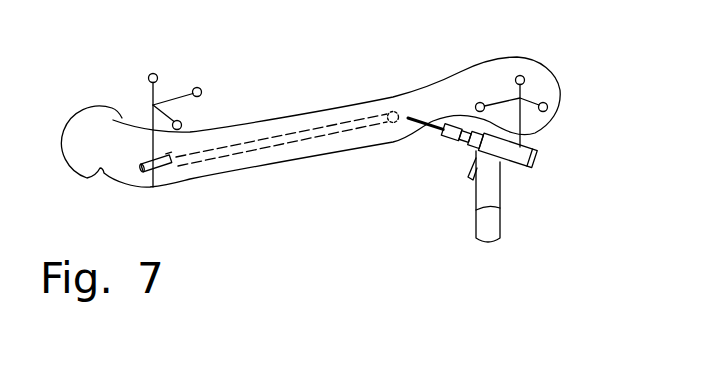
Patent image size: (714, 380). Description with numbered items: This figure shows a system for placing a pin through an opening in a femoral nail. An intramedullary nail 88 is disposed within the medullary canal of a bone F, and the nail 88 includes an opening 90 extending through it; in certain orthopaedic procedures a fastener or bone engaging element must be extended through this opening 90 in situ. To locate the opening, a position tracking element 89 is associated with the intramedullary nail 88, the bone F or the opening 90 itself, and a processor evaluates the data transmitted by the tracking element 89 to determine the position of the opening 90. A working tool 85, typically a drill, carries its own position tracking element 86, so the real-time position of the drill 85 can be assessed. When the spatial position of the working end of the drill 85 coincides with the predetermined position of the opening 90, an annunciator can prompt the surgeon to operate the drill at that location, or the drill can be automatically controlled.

The bone F is at (528, 65).
The working tool 85 is at (490, 195).
The position tracking element 86 is at (530, 90).
The intramedullary nail 88 is at (157, 167).
The position tracking element 89 is at (152, 93).
The opening 90 is at (393, 110).